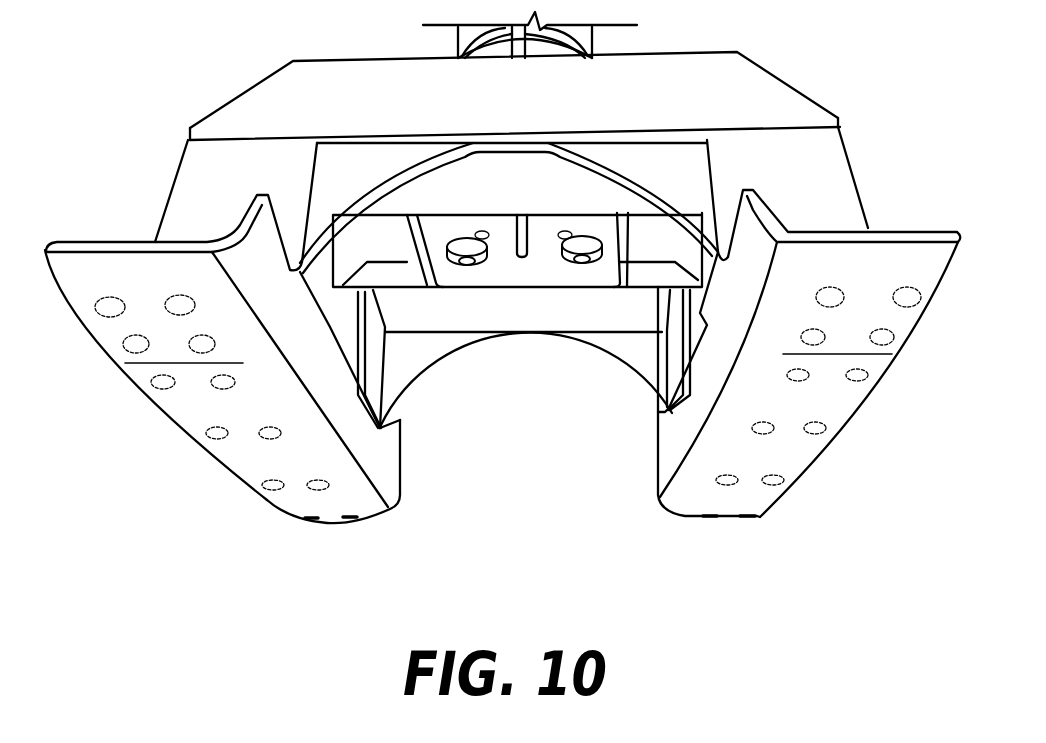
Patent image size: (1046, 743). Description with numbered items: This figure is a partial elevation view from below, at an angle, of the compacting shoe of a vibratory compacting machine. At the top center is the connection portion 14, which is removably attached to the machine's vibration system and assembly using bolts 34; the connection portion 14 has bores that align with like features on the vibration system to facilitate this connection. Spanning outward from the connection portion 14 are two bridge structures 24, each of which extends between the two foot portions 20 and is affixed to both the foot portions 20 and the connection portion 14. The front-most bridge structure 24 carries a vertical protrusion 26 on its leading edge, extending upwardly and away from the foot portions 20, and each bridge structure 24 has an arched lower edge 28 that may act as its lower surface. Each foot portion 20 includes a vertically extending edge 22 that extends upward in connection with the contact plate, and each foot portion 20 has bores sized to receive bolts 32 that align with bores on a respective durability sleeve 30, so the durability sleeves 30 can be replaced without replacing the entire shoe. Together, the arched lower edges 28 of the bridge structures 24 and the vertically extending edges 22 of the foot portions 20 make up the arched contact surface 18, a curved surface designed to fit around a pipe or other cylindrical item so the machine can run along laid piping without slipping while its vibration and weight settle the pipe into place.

The connection feature 14 is at (542, 263).
The arched contact surface 18 is at (433, 374).
The foot portions 20 is at (378, 532).
The vertically extending edge 22 is at (392, 472).
The bridge structures 24 is at (503, 277).
The vertical protrusion 26 is at (515, 76).
The arched lower edge 28 is at (636, 345).
The durability sleeves 30 is at (285, 498).
The bolts 32 is at (217, 436).
The bolts 34 is at (580, 266).